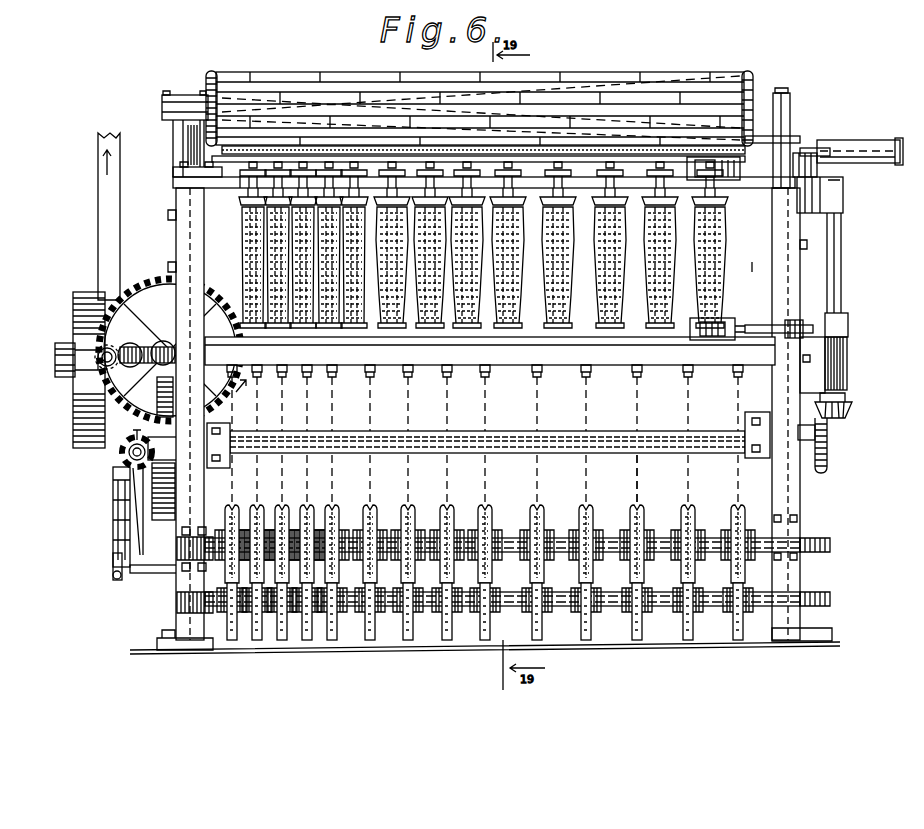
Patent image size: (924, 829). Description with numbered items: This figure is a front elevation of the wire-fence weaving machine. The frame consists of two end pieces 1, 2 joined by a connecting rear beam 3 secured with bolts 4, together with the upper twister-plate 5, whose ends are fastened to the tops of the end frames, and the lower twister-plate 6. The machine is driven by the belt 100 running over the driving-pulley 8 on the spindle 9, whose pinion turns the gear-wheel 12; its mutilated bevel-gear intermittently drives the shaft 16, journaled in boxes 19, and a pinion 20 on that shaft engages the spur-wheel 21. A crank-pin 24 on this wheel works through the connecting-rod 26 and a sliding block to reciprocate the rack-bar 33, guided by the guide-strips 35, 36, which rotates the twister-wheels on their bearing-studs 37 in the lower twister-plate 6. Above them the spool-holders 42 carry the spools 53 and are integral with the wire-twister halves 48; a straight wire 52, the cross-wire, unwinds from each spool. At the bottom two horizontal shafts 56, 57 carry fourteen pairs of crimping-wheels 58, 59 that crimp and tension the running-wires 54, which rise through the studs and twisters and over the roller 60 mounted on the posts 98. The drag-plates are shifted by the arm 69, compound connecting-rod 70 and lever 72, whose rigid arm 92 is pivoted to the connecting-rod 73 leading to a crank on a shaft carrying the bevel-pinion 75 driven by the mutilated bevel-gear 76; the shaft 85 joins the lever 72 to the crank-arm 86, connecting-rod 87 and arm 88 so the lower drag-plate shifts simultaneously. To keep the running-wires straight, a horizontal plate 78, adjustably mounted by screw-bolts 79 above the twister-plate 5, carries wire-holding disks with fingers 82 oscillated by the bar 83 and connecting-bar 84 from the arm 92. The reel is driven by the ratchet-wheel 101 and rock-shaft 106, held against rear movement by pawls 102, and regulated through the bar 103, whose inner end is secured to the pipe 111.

The end piece 1 is at (180, 242).
The end piece 2 is at (793, 488).
The connecting rear beam 3 is at (750, 276).
The bolts 4 is at (168, 215).
The upper twister-plate 5 is at (176, 184).
The lower twister-plate 6 is at (490, 351).
The driving-pulley 8 is at (80, 318).
The spindle 9 is at (57, 372).
The gear-wheel 12 is at (165, 521).
The shaft 16 is at (130, 457).
The boxes 19 is at (170, 450).
The pinion 20 is at (120, 456).
The spur-wheel 21 is at (152, 283).
The crank-pin 24 is at (96, 355).
The connecting-rod 26 is at (124, 366).
The rack-bar 33 is at (161, 345).
The guide-strip 35 is at (134, 349).
The guide-strip 36 is at (155, 394).
The bearing-studs 37 is at (640, 368).
The spool-holders 42 is at (716, 232).
The wire-twister half 48 is at (226, 194).
The straight wire 52 is at (712, 105).
The spool 53 is at (252, 242).
The crimped wire 54 is at (640, 465).
The horizontal shaft 56 is at (602, 540).
The horizontal shaft 57 is at (568, 606).
The crimping-wheels 58 is at (638, 516).
The crimping-wheels 59 is at (594, 612).
The roller 60 is at (642, 73).
The arm 69 is at (725, 186).
The compound connecting-rod 70 is at (808, 158).
The lever 72 is at (843, 188).
The connecting-rod 73 is at (868, 142).
The bevel-pinion 75 is at (853, 410).
The mutilated bevel-gear 76 is at (828, 450).
The horizontal plate 78 is at (248, 170).
The screw-bolts 79 is at (200, 166).
The fingers 82 is at (405, 155).
The bar 83 is at (778, 137).
The connecting-bar 84 is at (830, 152).
The shaft 85 is at (842, 254).
The crank-arm 86 is at (848, 320).
The connecting-rod 87 is at (812, 323).
The arm 88 is at (690, 332).
The rigid arm 92 is at (865, 163).
The brackets or posts 98 is at (178, 132).
The belt 100 is at (100, 198).
The ratchet-wheel 101 is at (118, 525).
The pawls 102 is at (120, 581).
The bar 103 is at (232, 463).
The rock-shaft 106 is at (115, 490).
The pipe 111 is at (505, 431).